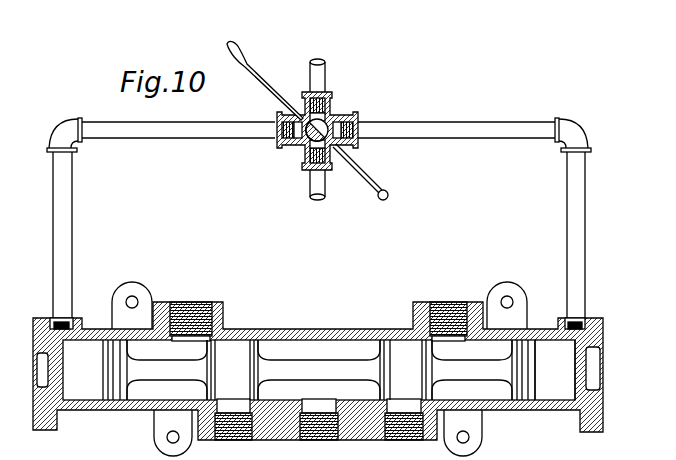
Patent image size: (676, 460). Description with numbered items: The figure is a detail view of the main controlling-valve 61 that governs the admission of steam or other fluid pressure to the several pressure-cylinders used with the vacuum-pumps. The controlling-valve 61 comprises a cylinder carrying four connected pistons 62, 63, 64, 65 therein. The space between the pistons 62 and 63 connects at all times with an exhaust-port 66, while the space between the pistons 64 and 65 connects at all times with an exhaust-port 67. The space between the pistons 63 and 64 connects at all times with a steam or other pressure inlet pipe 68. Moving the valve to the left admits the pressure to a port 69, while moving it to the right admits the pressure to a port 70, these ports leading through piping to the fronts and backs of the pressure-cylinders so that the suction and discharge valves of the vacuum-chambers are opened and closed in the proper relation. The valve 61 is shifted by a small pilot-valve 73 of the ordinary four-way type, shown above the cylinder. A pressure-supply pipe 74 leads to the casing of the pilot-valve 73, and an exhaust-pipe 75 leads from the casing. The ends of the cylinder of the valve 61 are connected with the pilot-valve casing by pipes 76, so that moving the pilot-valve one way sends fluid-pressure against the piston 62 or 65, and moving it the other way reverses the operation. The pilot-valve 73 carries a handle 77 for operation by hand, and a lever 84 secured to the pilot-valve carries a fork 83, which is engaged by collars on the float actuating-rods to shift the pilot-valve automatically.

The main controlling-valve 61 is at (318, 371).
The piston 62 is at (110, 362).
The piston 63 is at (307, 370).
The piston 64 is at (465, 370).
The piston 65 is at (527, 368).
The exhaust-port 66 is at (191, 309).
The exhaust-port 67 is at (448, 310).
The steam or other pressure inlet pipe 68 is at (319, 429).
The port 69 is at (233, 429).
The port 70 is at (404, 429).
The pilot-valve 73 is at (317, 131).
The pressure-supply pipe 74 is at (330, 74).
The exhaust-pipe 75 is at (328, 186).
The pipes 76 is at (327, 218).
The handle 77 is at (265, 75).
The fork 83 is at (383, 200).
The lever 84 is at (361, 168).